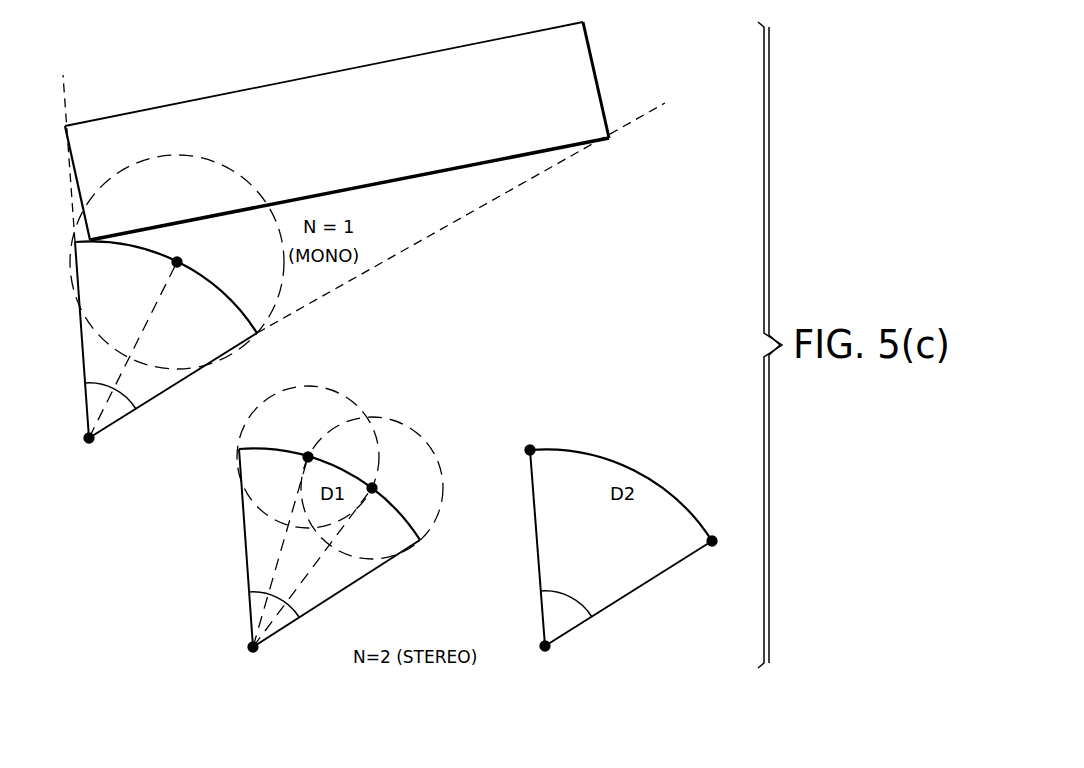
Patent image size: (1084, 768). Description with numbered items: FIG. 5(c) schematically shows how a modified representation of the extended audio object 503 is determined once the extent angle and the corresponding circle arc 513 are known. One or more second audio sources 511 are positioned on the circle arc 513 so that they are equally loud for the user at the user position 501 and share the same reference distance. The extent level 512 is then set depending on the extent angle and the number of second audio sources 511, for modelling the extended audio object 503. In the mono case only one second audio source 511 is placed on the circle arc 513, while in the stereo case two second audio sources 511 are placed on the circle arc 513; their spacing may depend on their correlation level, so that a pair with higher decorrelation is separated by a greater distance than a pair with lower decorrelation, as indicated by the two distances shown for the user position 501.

The user position 501 is at (89, 447).
The extended audio object 503 is at (358, 145).
The second audio sources 511 is at (170, 264).
The extent level 512 is at (248, 173).
The circle arc 513 is at (242, 270).